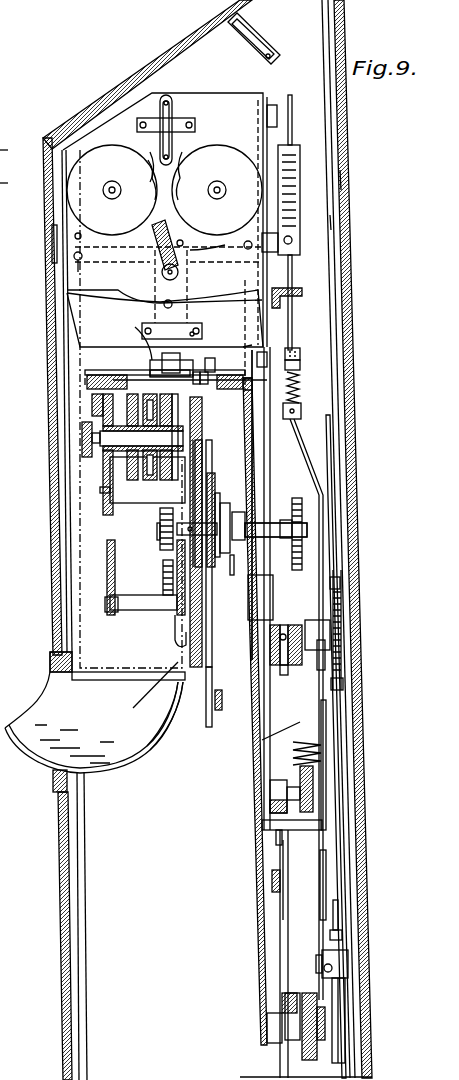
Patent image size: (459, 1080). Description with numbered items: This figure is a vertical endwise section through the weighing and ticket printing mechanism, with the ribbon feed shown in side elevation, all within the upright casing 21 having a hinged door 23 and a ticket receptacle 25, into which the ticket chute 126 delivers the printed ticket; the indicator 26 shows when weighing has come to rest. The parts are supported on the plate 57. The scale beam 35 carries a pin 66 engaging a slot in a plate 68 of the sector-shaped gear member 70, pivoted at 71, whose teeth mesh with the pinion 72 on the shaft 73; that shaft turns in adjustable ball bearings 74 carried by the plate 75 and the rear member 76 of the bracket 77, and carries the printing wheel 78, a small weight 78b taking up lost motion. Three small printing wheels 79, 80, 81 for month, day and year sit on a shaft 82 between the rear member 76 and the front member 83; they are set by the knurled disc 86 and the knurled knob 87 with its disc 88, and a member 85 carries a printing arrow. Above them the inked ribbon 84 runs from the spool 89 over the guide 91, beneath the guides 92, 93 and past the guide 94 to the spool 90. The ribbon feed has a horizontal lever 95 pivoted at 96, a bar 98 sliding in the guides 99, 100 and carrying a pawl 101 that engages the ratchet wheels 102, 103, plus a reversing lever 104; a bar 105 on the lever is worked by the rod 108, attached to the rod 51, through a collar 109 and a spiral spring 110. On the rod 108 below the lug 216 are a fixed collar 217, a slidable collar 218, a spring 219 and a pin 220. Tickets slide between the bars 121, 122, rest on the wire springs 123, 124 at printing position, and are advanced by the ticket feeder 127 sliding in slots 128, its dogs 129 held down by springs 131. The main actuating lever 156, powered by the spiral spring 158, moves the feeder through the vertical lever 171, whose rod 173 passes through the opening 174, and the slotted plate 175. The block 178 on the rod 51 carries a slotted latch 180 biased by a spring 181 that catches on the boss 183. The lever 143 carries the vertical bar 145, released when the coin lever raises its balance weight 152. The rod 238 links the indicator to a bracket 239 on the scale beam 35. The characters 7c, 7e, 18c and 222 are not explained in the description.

The lead 7c is at (11, 146).
The lead 7e is at (12, 178).
The indicator 26 is at (264, 33).
The guide 99 is at (187, 120).
The ribbon spool 89 is at (100, 153).
The ribbon spool 90 is at (217, 148).
The pawl 101 is at (151, 162).
The bar 98 is at (186, 160).
The ratchet wheel 102 is at (147, 192).
The ratchet wheel 103 is at (189, 204).
The horizontal lever 95 is at (114, 248).
The guide 91 is at (81, 238).
The guide 94 is at (196, 248).
The pivot 96 is at (80, 260).
The reversing lever 104 is at (118, 292).
The inked ribbon 84 is at (198, 268).
The small springs 131 is at (152, 358).
The guide 100 is at (192, 332).
The ticket feeder 127 is at (205, 372).
The wire spring 123 is at (200, 372).
The narrow slots 128 is at (213, 358).
The wire spring 124 is at (155, 372).
The metal bar 121 is at (95, 375).
The metal bar 122 is at (112, 376).
The guide 92 is at (85, 378).
The spiral spring 110 is at (353, 181).
The bar 105 is at (300, 210).
The collar 109 is at (355, 222).
The lug 216 is at (302, 294).
The rod 108 is at (294, 328).
The short horizontal rod 173 is at (245, 347).
The slidable collar 218 is at (300, 355).
The small pin 220 is at (300, 365).
The small spiral spring 219 is at (299, 393).
The small collar 217 is at (301, 409).
The guide 93 is at (252, 384).
The rod or link 238 is at (331, 464).
The knurled disc 86 is at (96, 400).
The disc 88 is at (104, 412).
The shaft 82 is at (105, 438).
The knurled knob 87 is at (82, 442).
The printing wheel 79 is at (135, 465).
The printing wheel 80 is at (150, 477).
The printing wheel 81 is at (166, 478).
The dogs 129 is at (200, 412).
The member 85 is at (203, 432).
The printing wheel 78 is at (202, 464).
The adjustable ball bearings 74 is at (216, 505).
The elongated opening 174 is at (252, 390).
The vertical lever 171 is at (266, 462).
The shaft 73 is at (283, 520).
The pinion 72 is at (308, 530).
The sector-shaped gear member 70 is at (303, 553).
The post 18c is at (232, 562).
The pivot 71 is at (337, 582).
The small bracket 239 is at (341, 623).
The pin 66 is at (328, 645).
The plate 68 is at (322, 663).
The scale beam 35 is at (301, 667).
The front member 83 is at (107, 615).
The bracket 77 is at (137, 603).
The rear member 76 is at (182, 620).
The plate 75 is at (216, 700).
The ticket chute 126 is at (142, 673).
The ticket receptacle 25 is at (52, 710).
The hinged door 23 is at (50, 708).
The rim 222 is at (152, 740).
The small weight 78b is at (209, 727).
The upright casing 21 is at (52, 778).
The slotted plate 175 is at (296, 720).
The spiral spring 158 is at (322, 752).
The main actuating lever 156 is at (313, 798).
The slotted latch 180 is at (322, 838).
The boss 183 is at (280, 832).
The spring 181 is at (326, 887).
The plate 57 is at (252, 848).
The light horizontal lever 143 is at (272, 884).
The vertical bar 145 is at (280, 956).
The metal block 178 is at (348, 955).
The rod 51 is at (345, 1027).
The balance weight 152 is at (320, 1048).